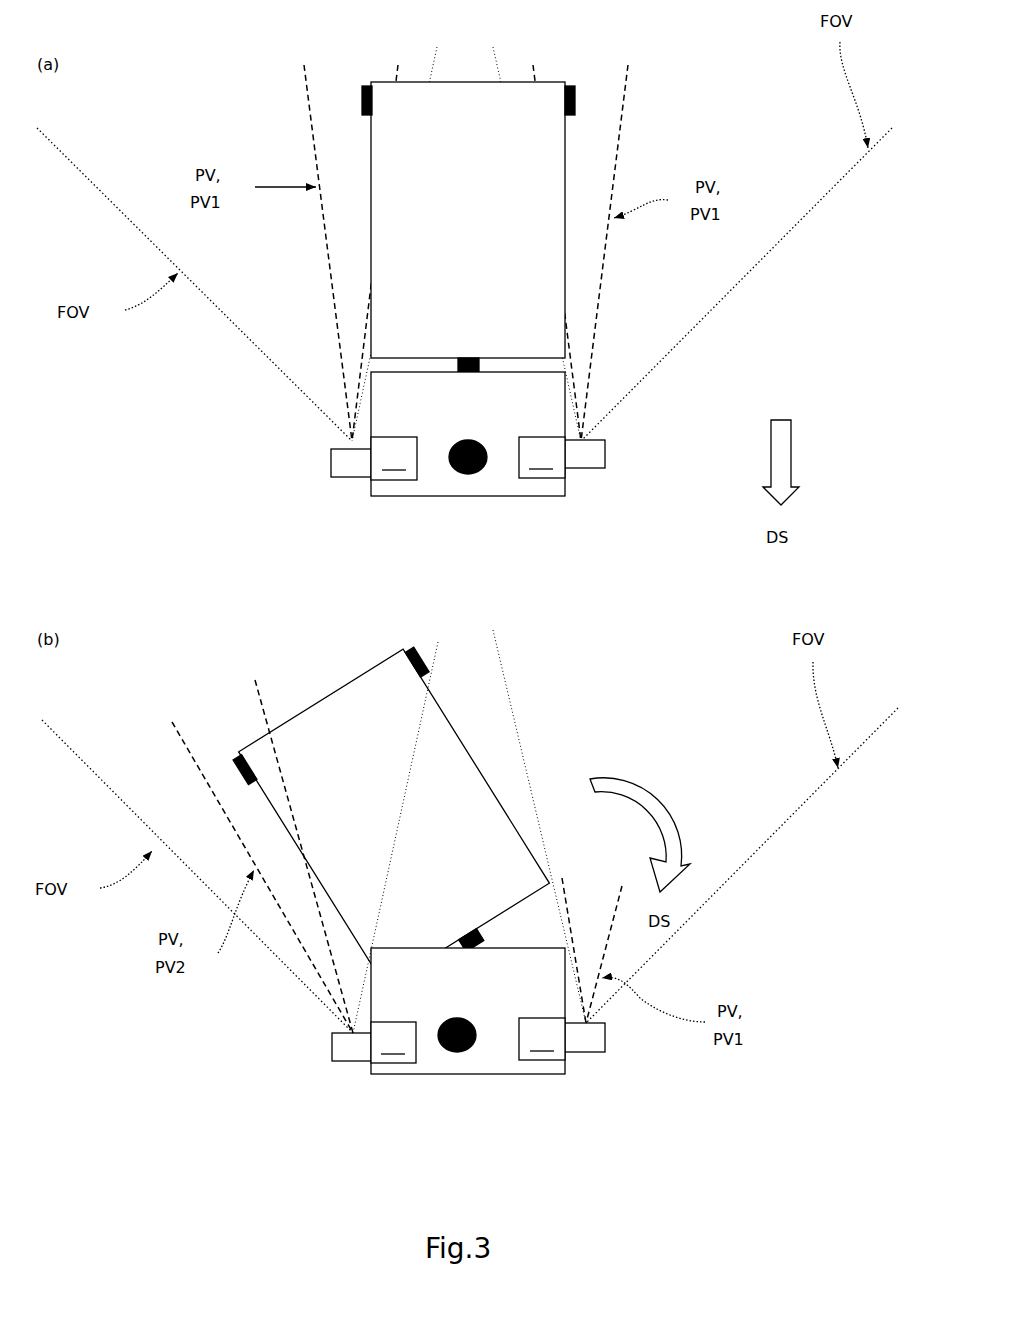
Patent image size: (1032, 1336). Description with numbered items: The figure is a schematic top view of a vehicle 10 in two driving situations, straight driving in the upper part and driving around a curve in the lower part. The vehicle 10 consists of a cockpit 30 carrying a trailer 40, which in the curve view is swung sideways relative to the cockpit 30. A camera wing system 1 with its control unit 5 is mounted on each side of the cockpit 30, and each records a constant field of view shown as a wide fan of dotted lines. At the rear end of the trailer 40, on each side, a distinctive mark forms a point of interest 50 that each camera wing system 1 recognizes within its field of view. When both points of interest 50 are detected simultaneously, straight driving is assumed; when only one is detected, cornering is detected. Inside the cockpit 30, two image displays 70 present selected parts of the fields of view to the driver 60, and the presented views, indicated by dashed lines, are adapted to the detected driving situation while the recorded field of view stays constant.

The camera wing system 1 is at (457, 752).
The control unit 5 is at (329, 460).
The vehicle 10 is at (473, 575).
The cockpit 30 is at (470, 498).
The trailer 40 is at (468, 80).
The point of interest 50 is at (360, 100).
The driver 60 is at (468, 437).
The image display 70 is at (468, 750).